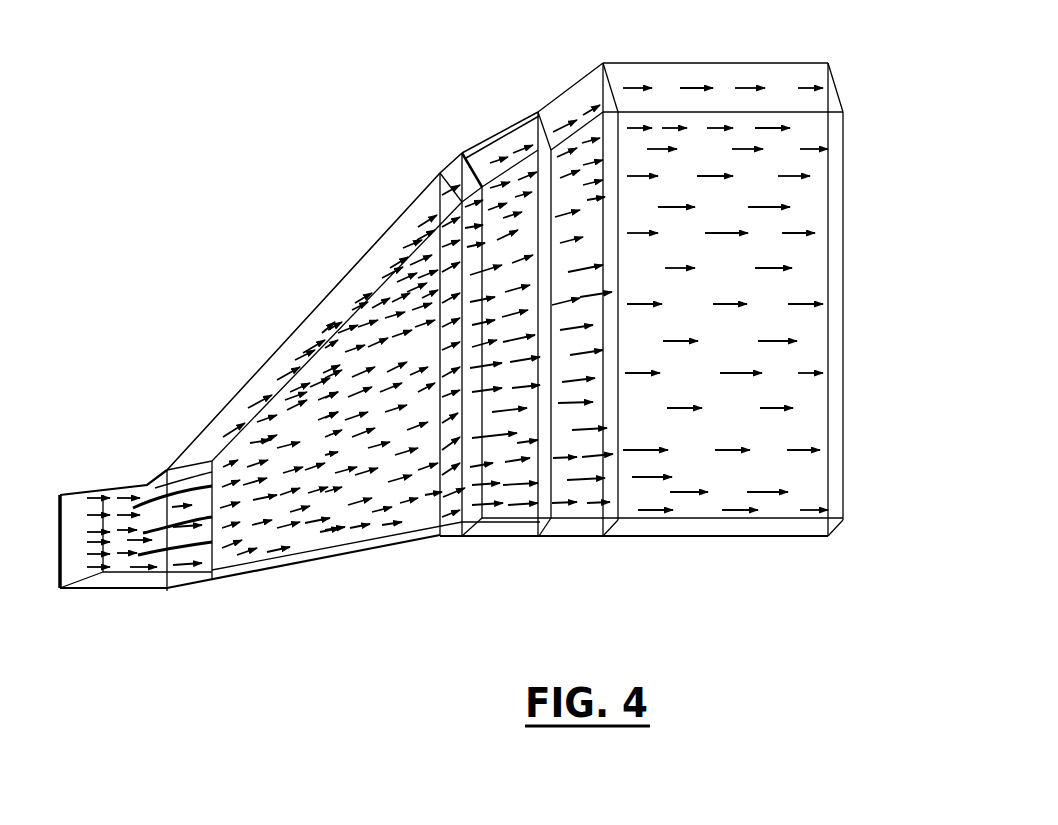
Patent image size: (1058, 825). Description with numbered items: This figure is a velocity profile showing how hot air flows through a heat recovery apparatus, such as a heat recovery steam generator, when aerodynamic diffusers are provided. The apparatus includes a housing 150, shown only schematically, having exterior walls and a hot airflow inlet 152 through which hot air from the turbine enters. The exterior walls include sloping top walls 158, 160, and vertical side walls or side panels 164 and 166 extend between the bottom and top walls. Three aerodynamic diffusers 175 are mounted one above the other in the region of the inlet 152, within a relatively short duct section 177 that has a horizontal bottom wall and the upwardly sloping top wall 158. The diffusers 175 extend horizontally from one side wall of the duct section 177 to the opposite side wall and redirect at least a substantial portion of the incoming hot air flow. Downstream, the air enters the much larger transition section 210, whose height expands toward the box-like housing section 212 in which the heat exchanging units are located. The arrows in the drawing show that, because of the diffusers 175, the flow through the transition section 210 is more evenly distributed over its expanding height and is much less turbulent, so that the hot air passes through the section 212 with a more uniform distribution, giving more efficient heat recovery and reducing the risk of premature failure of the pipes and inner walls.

The housing 150 is at (557, 98).
The hot airflow inlet 152 is at (73, 493).
The sloping top wall 158 is at (137, 483).
The sloping top wall 160 is at (317, 305).
The side wall 164 is at (252, 387).
The side wall 166 is at (703, 123).
The aerodynamic diffuser 175 is at (178, 548).
The duct section 177 is at (133, 593).
The transition section 210 is at (405, 492).
The box-like housing section 212 is at (773, 432).